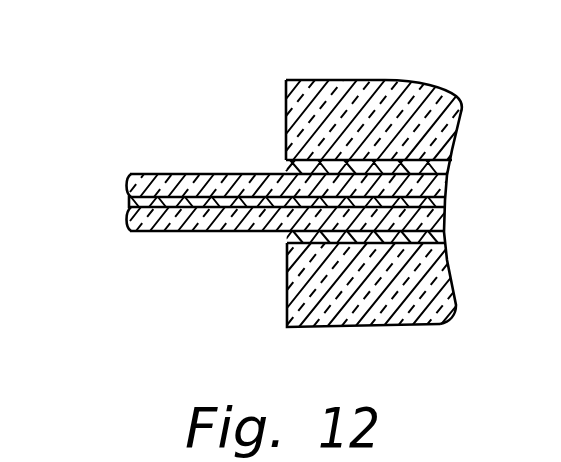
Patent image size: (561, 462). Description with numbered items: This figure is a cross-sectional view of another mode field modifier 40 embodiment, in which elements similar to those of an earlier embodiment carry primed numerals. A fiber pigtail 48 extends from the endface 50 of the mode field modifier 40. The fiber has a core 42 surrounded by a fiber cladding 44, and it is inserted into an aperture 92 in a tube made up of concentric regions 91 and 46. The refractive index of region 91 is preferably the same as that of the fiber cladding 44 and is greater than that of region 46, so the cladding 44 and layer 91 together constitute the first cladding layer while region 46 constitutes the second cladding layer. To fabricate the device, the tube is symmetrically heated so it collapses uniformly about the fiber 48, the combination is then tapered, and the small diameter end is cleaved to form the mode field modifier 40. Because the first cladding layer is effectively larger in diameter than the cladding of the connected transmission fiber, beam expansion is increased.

The mode field modifier 40 is at (425, 317).
The middle bonding layer 42 is at (136, 201).
The fiber cladding 44 is at (207, 222).
The region 46 is at (380, 82).
The fiber pigtail 48 is at (155, 238).
The endface 50 is at (285, 98).
The region 91 is at (286, 168).
The aperture 92 is at (280, 220).